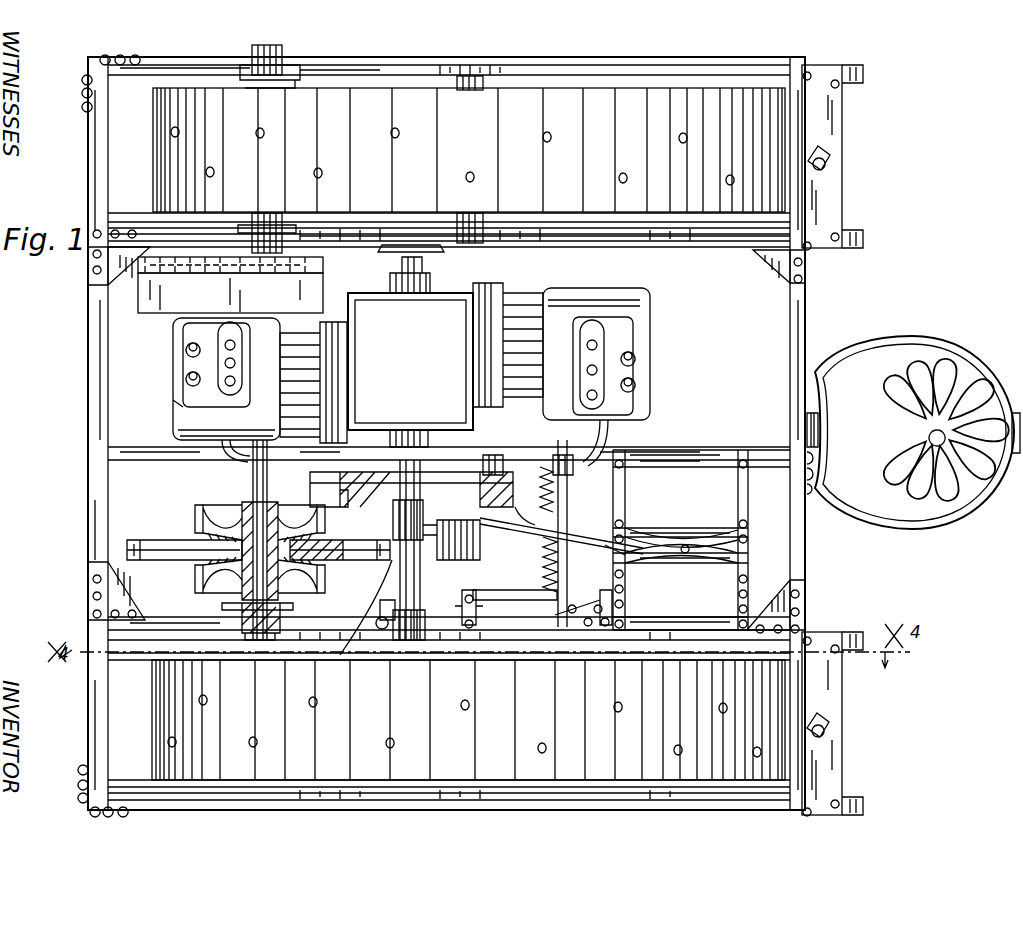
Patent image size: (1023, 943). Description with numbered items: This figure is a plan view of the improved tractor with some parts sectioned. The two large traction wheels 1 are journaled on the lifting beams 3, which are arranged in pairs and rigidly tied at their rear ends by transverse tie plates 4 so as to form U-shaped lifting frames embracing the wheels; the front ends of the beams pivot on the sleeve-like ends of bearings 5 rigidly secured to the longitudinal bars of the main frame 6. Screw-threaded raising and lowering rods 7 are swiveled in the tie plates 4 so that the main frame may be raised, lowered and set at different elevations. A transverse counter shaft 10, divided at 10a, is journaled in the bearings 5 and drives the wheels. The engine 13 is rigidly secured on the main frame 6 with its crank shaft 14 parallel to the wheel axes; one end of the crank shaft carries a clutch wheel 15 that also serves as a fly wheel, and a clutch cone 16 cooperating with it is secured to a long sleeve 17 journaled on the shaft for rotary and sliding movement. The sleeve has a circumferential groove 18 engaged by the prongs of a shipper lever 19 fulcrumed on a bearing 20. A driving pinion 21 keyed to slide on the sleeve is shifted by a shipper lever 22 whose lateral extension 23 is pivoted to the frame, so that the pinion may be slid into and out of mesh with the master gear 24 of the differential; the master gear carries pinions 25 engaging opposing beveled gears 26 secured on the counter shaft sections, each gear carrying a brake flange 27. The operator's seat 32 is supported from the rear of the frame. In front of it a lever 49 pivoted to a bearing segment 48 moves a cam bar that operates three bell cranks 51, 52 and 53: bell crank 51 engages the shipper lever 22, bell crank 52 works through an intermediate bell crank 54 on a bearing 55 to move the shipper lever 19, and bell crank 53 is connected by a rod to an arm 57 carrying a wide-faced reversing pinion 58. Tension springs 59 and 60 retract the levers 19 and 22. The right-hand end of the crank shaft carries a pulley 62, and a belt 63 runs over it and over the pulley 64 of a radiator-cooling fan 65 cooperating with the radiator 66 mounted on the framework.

The traction wheel 1 is at (476, 118).
The lifting beam 3 is at (657, 73).
The tie plate 4 is at (838, 212).
The bearing 5 is at (232, 627).
The main frame 6 is at (797, 307).
The raising and lowering rod 7 is at (822, 152).
The counter shaft 10 is at (253, 473).
The division of the counter shaft 10a is at (240, 517).
The engine 13 is at (411, 374).
The crank shaft 14 is at (430, 258).
The clutch wheel 15 is at (486, 455).
The clutch cone 16 is at (367, 490).
The sleeve 17 is at (384, 576).
The circumferential groove 18 is at (360, 620).
The shipper lever 19 is at (487, 592).
The bearing 20 is at (465, 605).
The driving pinion 21 is at (395, 528).
The shipper lever 22 is at (565, 525).
The lateral extension 23 is at (560, 620).
The master gear 24 is at (127, 547).
The pinion 25 is at (327, 562).
The beveled gear 26 is at (193, 555).
The brake flange 27 is at (207, 527).
The operator's seat 32 is at (822, 430).
The bearing segment 48 is at (713, 540).
The lever 49 is at (685, 547).
The bell crank 51 is at (628, 523).
The bell crank 52 is at (625, 572).
The bell crank 53 is at (738, 572).
The intermediate bell crank 54 is at (572, 620).
The bearing 55 is at (620, 622).
The arm 57 is at (413, 645).
The reversing pinion 58 is at (497, 522).
The tension spring 59 is at (545, 572).
The tension spring 60 is at (533, 460).
The pulley 62 is at (432, 242).
The belt 63 is at (353, 242).
The pulley 64 is at (220, 215).
The radiator-cooling fan 65 is at (163, 248).
The radiator 66 is at (163, 290).